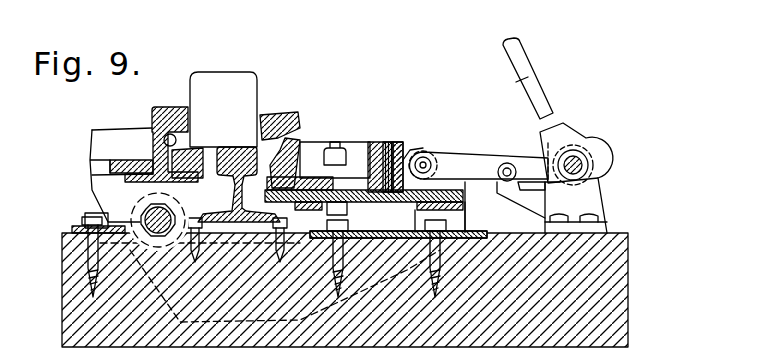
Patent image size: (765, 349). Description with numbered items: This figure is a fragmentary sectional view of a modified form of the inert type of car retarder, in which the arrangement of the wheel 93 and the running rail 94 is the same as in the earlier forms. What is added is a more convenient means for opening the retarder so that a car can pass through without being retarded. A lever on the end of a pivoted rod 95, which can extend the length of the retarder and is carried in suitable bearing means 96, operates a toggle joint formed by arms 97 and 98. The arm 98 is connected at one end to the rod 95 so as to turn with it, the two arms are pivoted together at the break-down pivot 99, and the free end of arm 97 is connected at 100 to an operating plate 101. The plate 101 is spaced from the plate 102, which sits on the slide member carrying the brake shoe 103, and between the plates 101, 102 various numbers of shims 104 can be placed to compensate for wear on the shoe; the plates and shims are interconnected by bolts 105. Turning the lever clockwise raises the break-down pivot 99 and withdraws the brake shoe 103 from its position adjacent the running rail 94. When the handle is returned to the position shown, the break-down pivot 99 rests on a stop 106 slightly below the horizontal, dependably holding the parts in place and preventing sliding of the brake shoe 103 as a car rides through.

The wheel 93 is at (248, 92).
The running rail 94 is at (230, 195).
The pivoted rod 95 is at (587, 158).
The bearing means 96 is at (590, 196).
The arm 97 is at (477, 165).
The arm 98 is at (532, 165).
The break-down pivot 99 is at (500, 181).
The connection 100 is at (425, 157).
The operating plate 101 is at (397, 142).
The plate 102 is at (372, 143).
The brake shoe 103 is at (288, 115).
The shims 104 is at (386, 142).
The bolts 105 is at (410, 150).
The stop 106 is at (517, 195).